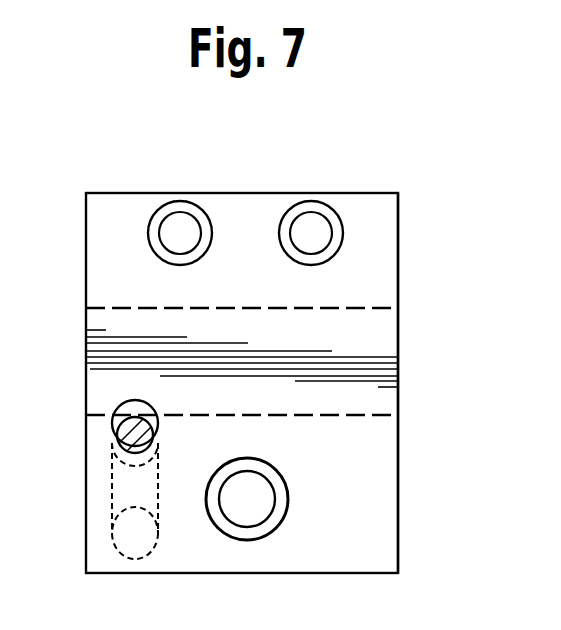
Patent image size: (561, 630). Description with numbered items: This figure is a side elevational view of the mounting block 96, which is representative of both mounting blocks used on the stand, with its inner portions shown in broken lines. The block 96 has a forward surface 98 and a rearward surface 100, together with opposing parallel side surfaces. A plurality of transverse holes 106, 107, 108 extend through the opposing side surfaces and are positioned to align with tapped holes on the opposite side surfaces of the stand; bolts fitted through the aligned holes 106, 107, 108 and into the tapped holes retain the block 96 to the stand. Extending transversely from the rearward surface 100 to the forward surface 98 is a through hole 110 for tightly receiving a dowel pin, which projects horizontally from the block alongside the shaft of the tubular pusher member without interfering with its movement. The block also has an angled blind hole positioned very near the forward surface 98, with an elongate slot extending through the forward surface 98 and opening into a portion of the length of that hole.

The mounting block 96 is at (448, 277).
The forward surface 98 is at (86, 256).
The rearward surface 100 is at (398, 243).
The transverse hole 106 is at (311, 212).
The transverse hole 107 is at (180, 212).
The transverse hole 108 is at (243, 538).
The through hole 110 is at (363, 308).